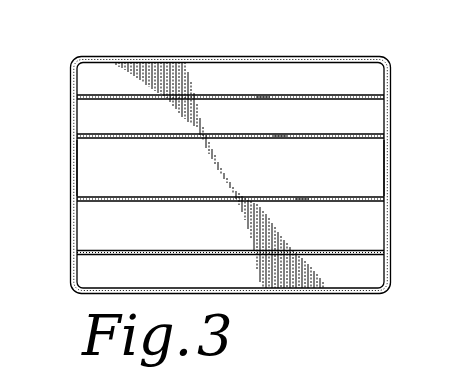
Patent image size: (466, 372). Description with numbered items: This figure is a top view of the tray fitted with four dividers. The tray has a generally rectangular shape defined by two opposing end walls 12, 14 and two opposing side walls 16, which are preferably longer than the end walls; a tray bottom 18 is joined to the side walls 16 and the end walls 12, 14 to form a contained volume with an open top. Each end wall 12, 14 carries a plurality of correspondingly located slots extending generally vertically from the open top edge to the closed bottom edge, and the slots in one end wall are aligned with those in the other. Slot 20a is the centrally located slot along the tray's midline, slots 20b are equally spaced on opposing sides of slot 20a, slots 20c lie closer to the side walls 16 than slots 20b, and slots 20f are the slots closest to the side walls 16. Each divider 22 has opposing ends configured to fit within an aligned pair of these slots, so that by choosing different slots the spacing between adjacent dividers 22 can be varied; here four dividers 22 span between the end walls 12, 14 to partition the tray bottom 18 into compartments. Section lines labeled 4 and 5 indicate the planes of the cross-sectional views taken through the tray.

The section line 4- 4 is at (42, 82).
The section line 5- 5 is at (312, 50).
The end wall 12 is at (390, 268).
The end wall 14 is at (72, 284).
The side walls 16 is at (166, 60).
The tray bottom 18 is at (184, 177).
The slot 20a is at (76, 174).
The slots 20b is at (76, 199).
The slots 20c is at (76, 137).
The slots 20f is at (76, 99).
The divider 22 is at (263, 96).